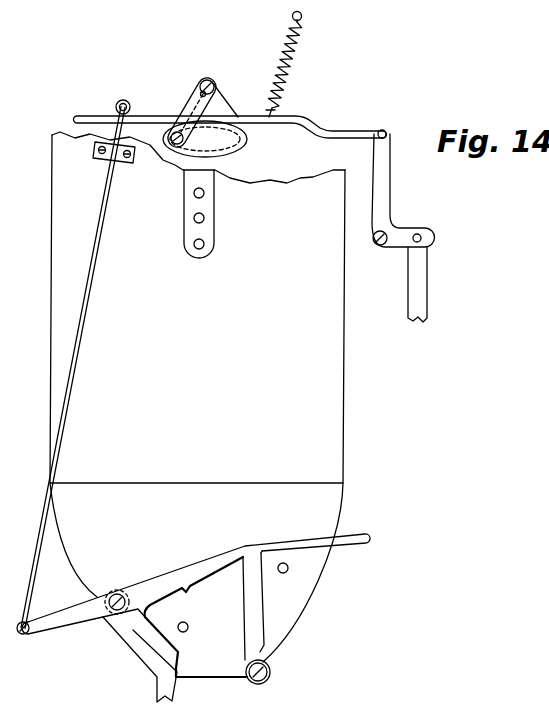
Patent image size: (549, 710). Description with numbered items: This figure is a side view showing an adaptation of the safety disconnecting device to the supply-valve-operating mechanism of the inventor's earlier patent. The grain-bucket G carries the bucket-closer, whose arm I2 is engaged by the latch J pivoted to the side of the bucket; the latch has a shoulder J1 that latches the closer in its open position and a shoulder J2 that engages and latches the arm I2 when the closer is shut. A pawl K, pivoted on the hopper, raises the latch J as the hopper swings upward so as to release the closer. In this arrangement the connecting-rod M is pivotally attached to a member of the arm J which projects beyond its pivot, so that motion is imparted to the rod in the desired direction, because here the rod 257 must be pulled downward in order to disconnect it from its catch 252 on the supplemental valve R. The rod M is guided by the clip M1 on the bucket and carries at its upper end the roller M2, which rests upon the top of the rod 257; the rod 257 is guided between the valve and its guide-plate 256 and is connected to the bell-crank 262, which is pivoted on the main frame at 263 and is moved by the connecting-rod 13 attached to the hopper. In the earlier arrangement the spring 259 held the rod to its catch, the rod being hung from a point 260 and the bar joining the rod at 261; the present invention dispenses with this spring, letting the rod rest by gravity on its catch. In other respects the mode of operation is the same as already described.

The grain-bucket G is at (197, 397).
The connecting-rod M is at (75, 380).
The roller M2 is at (117, 101).
The clip M1 is at (94, 160).
The rod 257 is at (304, 126).
The spring 259 is at (293, 60).
The spring hook 260 is at (301, 13).
The guide-plate 256 is at (193, 132).
The engaging lug 252 is at (200, 93).
The supplemental valve R is at (228, 155).
The pivot 261 is at (388, 133).
The bell-crank 262 is at (387, 196).
The pivot 263 is at (381, 246).
The connecting-rod 13 is at (428, 282).
The latch J is at (196, 584).
The shoulder J1 is at (196, 617).
The shoulder J2 is at (258, 557).
The arm of bucket-closer I2 is at (252, 601).
The pawl K is at (177, 688).